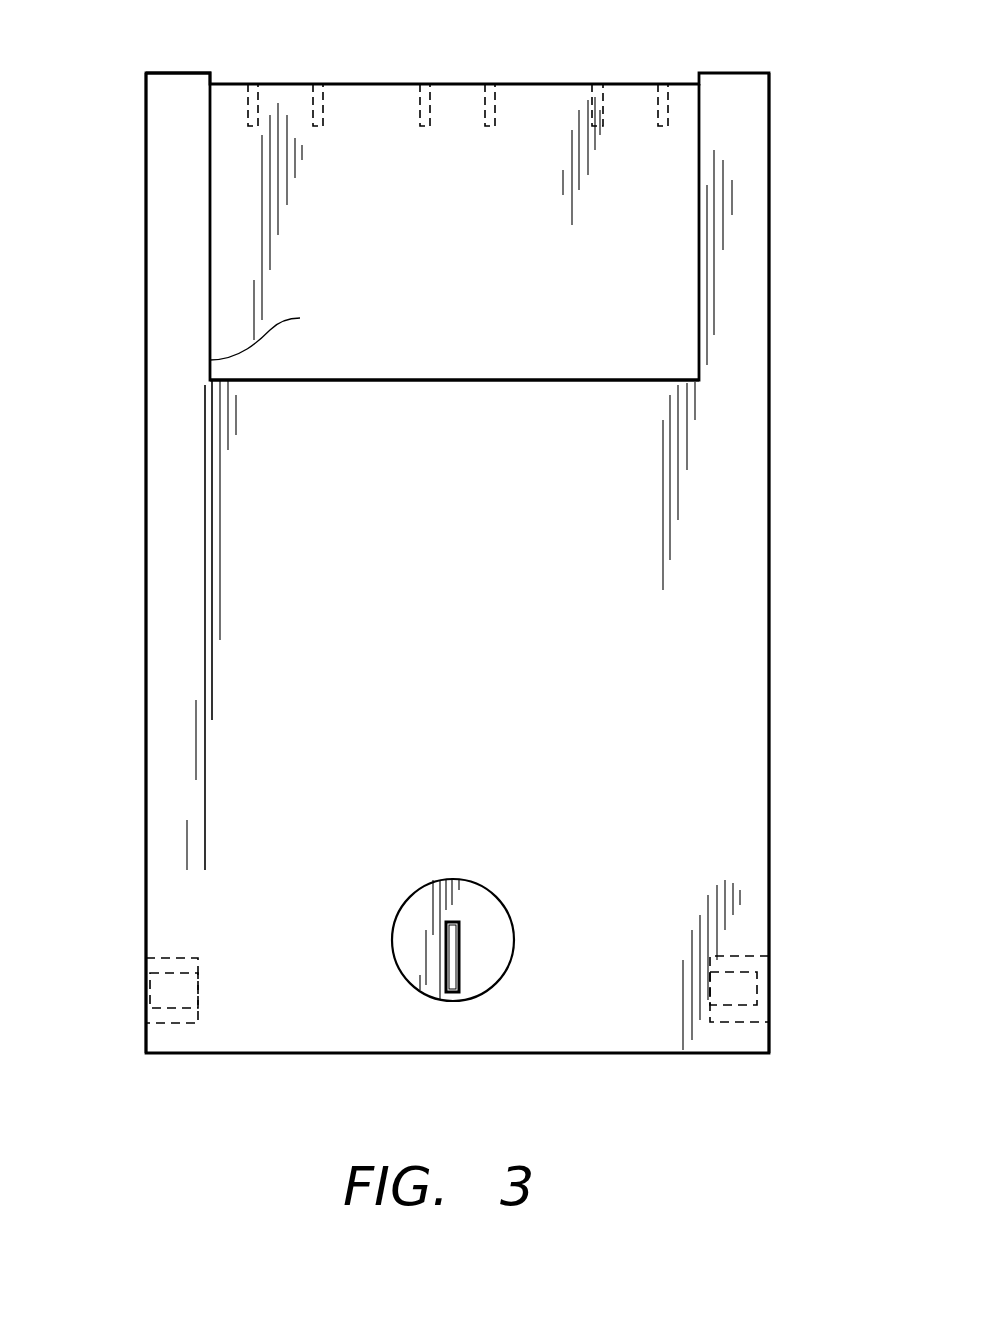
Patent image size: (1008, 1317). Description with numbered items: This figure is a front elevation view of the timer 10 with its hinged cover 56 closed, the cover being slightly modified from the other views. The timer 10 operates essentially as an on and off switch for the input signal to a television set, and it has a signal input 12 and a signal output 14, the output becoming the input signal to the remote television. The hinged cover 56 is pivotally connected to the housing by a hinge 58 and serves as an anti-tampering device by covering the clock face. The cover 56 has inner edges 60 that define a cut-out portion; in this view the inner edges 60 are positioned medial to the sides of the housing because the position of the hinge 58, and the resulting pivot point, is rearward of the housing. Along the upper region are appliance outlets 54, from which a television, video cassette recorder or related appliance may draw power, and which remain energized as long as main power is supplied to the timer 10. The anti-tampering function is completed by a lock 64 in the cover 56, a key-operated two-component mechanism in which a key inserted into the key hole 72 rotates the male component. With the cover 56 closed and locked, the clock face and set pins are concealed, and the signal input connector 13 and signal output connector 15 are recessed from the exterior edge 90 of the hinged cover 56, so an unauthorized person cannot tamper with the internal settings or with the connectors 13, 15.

The timer 10 is at (853, 494).
The signal input 12 is at (141, 989).
The signal input connector 13 is at (148, 1002).
The signal output 14 is at (807, 987).
The signal output connector 15 is at (757, 995).
The appliance outlets 54 is at (558, 64).
The hinged cover 56 is at (205, 572).
The hinge 58 is at (141, 86).
The inner edges 60 is at (296, 380).
The lock 64 is at (403, 886).
The key hole 72 is at (445, 972).
The exterior edge 90 is at (768, 447).